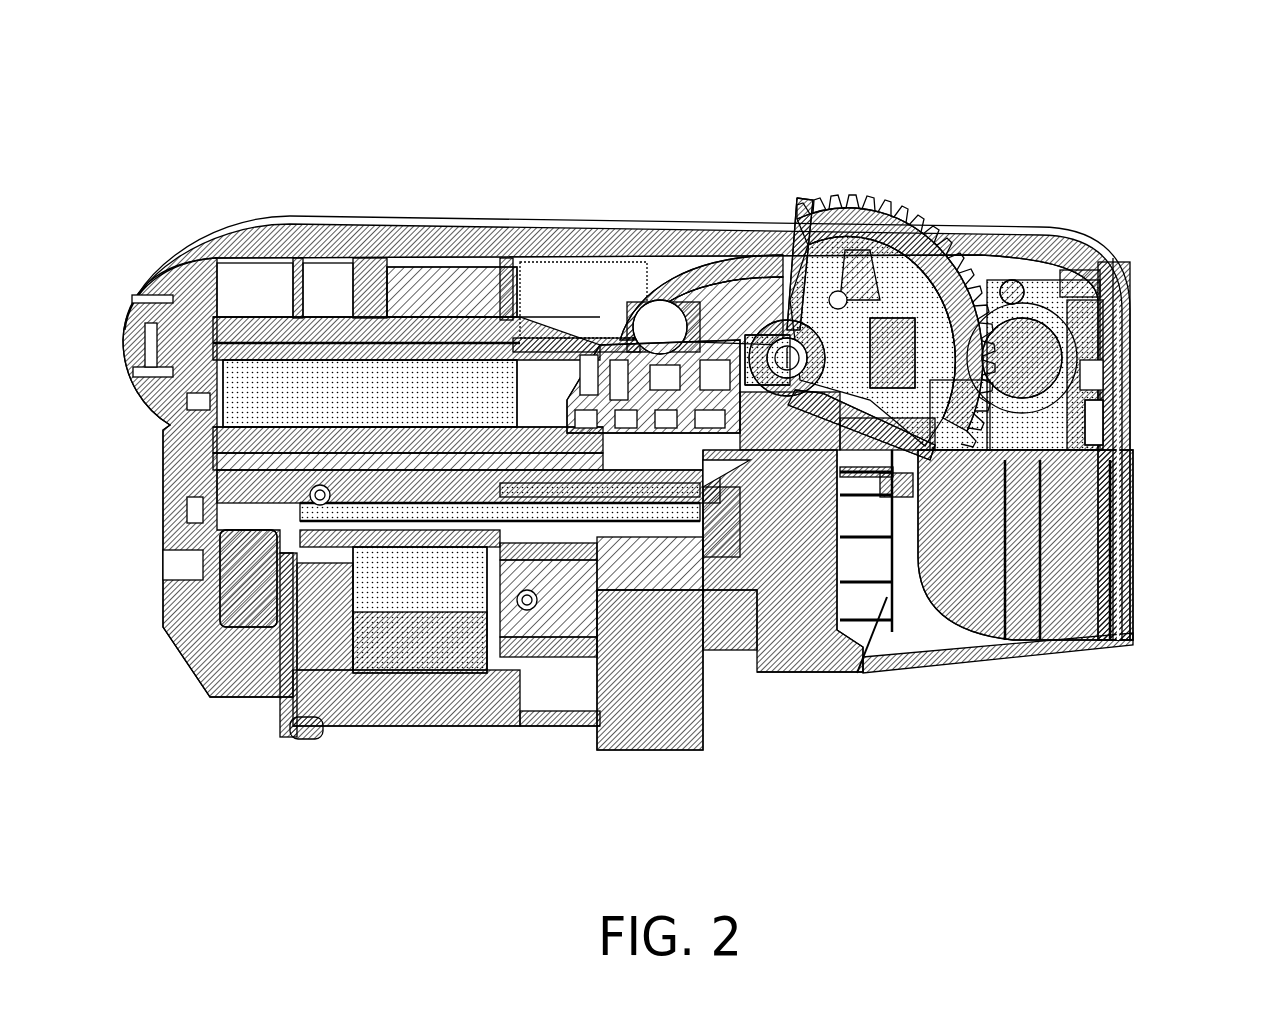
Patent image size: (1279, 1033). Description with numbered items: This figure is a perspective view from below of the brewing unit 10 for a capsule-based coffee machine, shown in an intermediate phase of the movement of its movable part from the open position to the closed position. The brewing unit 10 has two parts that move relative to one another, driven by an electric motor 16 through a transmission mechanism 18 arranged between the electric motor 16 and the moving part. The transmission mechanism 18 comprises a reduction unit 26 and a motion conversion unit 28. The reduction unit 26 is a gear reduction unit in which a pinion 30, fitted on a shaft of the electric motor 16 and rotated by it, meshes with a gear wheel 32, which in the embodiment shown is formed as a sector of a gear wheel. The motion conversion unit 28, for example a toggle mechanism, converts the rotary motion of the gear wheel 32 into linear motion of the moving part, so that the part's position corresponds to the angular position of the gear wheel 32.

The brewing unit 10 is at (202, 697).
The electric motor 16 is at (1100, 635).
The transmission mechanism 18 is at (822, 182).
The reduction unit 26 is at (1022, 212).
The motion conversion unit 28 is at (790, 668).
The pinion 30 is at (1117, 312).
The gear wheel 32 is at (890, 210).